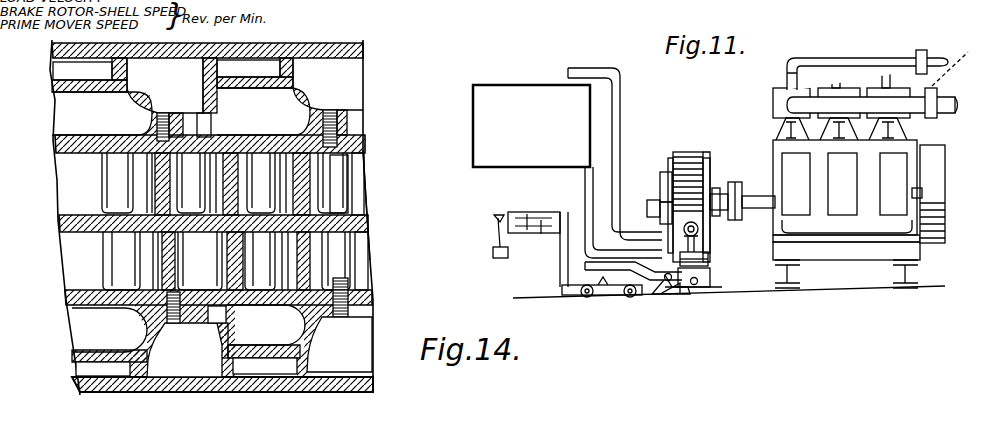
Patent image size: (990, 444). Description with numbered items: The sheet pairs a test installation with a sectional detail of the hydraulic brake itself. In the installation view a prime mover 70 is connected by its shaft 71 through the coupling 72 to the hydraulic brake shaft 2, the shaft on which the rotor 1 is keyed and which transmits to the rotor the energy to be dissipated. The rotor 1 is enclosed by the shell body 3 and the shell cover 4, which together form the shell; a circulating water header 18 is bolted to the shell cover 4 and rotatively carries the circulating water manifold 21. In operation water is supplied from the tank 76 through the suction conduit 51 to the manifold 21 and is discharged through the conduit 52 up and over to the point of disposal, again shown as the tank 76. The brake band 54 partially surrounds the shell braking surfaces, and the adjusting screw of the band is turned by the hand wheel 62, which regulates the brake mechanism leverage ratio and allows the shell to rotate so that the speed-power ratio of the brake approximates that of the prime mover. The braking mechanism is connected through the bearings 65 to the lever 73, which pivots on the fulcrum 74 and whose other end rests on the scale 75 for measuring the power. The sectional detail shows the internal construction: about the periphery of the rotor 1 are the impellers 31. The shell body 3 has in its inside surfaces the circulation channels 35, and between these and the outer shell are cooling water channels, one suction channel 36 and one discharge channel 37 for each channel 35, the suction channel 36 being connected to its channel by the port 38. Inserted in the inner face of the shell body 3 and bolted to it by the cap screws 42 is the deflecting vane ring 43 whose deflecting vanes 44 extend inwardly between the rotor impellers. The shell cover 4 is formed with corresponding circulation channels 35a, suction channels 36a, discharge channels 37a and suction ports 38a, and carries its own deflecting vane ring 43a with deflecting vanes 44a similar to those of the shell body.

In FIG. 14, the rotor 1 is at (362, 204).
In FIG. 11, the shaft 2 is at (718, 192).
In FIG. 14, the shell body 3 is at (347, 389).
In FIG. 11, the shell body 3 is at (707, 158).
In FIG. 11, the shell cover 4 is at (668, 170).
In FIG. 11, the circulating water header 18 is at (664, 184).
In FIG. 11, the circulating water manifold 21 is at (659, 203).
In FIG. 14, the impellers 31 is at (158, 255).
In FIG. 14, the circulation channels 35 is at (188, 328).
In FIG. 14, the suction channel 36 is at (259, 347).
In FIG. 14, the discharge channel 37 is at (186, 369).
In FIG. 14, the port 38 is at (222, 313).
In FIG. 14, the cap screws 42 is at (352, 278).
In FIG. 14, the deflecting vane ring 43 is at (368, 287).
In FIG. 14, the deflecting vanes 44 is at (344, 254).
In FIG. 14, the circulation channels 35a is at (181, 111).
In FIG. 14, the suction channels 36a is at (245, 85).
In FIG. 14, the discharge channels 37a is at (166, 71).
In FIG. 14, the suction ports 38a is at (210, 127).
In FIG. 14, the deflecting vane ring 43a is at (363, 140).
In FIG. 14, the deflecting vanes 44a is at (338, 184).
In FIG. 11, the suction conduit 51 is at (584, 194).
In FIG. 11, the conduit 52 is at (621, 114).
In FIG. 11, the brake band 54 is at (689, 153).
In FIG. 11, the hand wheel 62 is at (700, 230).
In FIG. 11, the bearings 65 is at (712, 260).
In FIG. 11, the prime mover 70 is at (773, 142).
In FIG. 11, the shaft 71 is at (752, 195).
In FIG. 11, the coupling 72 is at (734, 181).
In FIG. 11, the lever 73 is at (712, 281).
In FIG. 11, the fulcrum 74 is at (664, 283).
In FIG. 11, the scale 75 is at (560, 256).
In FIG. 11, the tank 76 is at (486, 112).